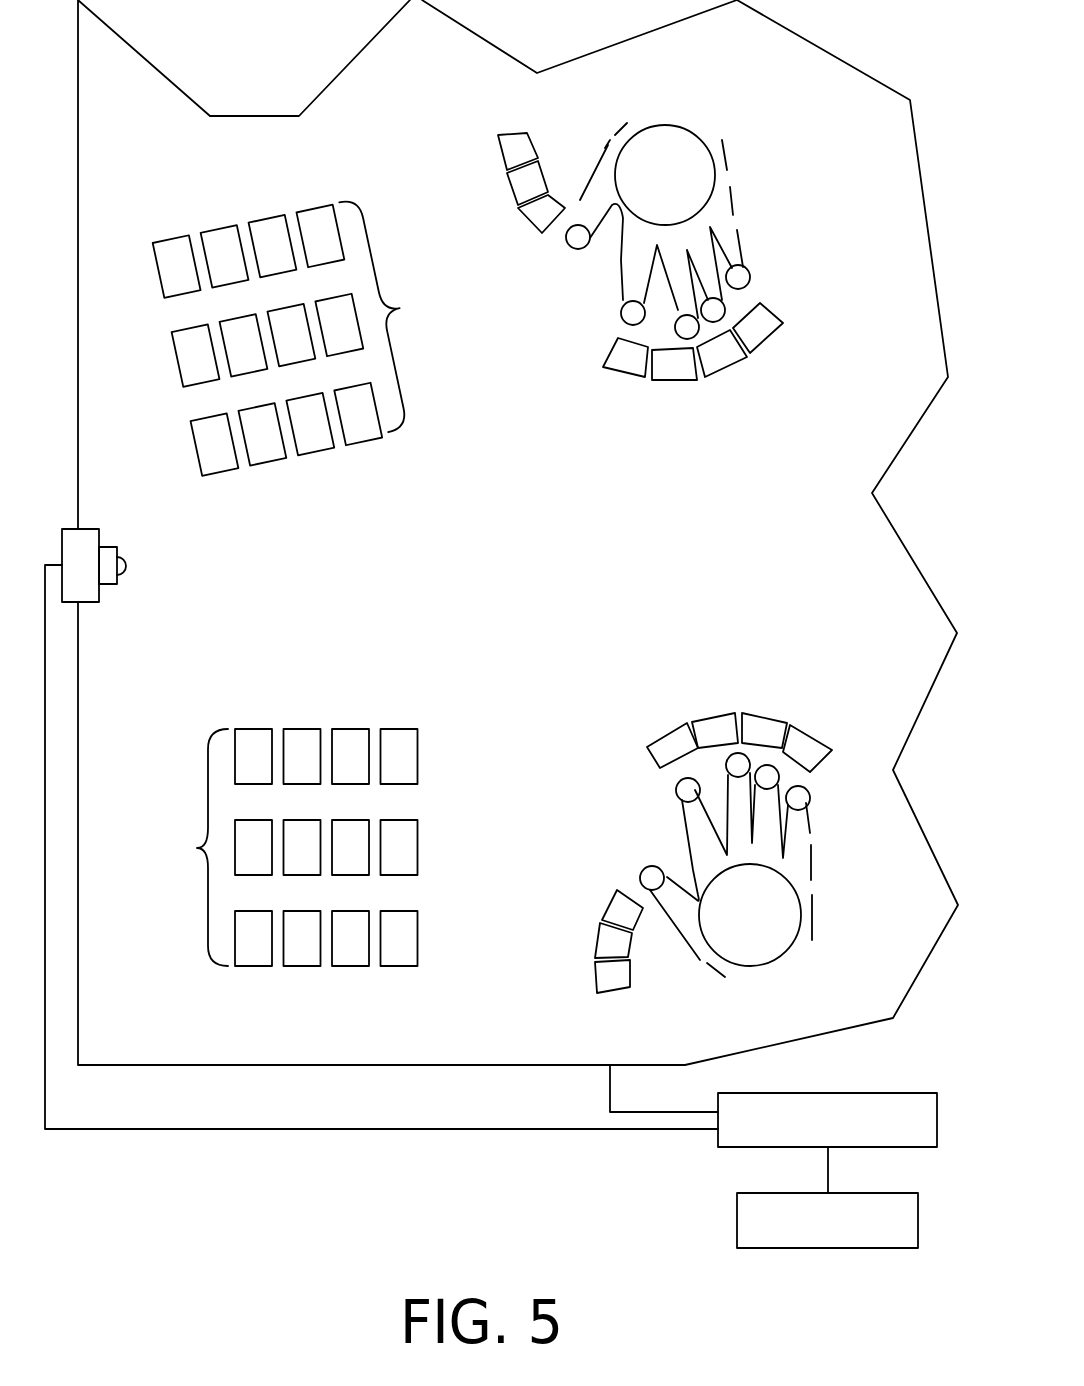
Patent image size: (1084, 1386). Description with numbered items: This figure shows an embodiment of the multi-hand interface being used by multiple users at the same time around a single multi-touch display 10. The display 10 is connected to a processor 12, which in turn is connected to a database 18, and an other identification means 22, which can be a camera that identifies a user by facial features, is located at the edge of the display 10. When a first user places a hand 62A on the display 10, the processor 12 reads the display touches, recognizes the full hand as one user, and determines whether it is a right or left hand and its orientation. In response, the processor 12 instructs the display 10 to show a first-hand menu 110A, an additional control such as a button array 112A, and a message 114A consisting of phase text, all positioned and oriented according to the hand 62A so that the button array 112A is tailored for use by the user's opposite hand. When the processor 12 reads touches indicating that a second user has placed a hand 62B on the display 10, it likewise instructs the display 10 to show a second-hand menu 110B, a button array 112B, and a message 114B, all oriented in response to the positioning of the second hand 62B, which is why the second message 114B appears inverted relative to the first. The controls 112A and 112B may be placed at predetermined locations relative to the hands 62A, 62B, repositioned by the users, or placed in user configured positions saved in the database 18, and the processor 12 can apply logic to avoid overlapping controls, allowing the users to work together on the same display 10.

The multi-touch display 10 is at (298, 1065).
The processor 12 is at (862, 1147).
The database 18 is at (862, 1248).
The other identification means 22 is at (108, 585).
The hand of first user 62A is at (810, 890).
The hand of second user 62B is at (728, 190).
The first-hand menu 110A is at (645, 815).
The second-hand menu 110B is at (550, 118).
The button array 112A is at (267, 847).
The button array 112B is at (311, 335).
The message 114A is at (535, 652).
The message 114B is at (560, 480).